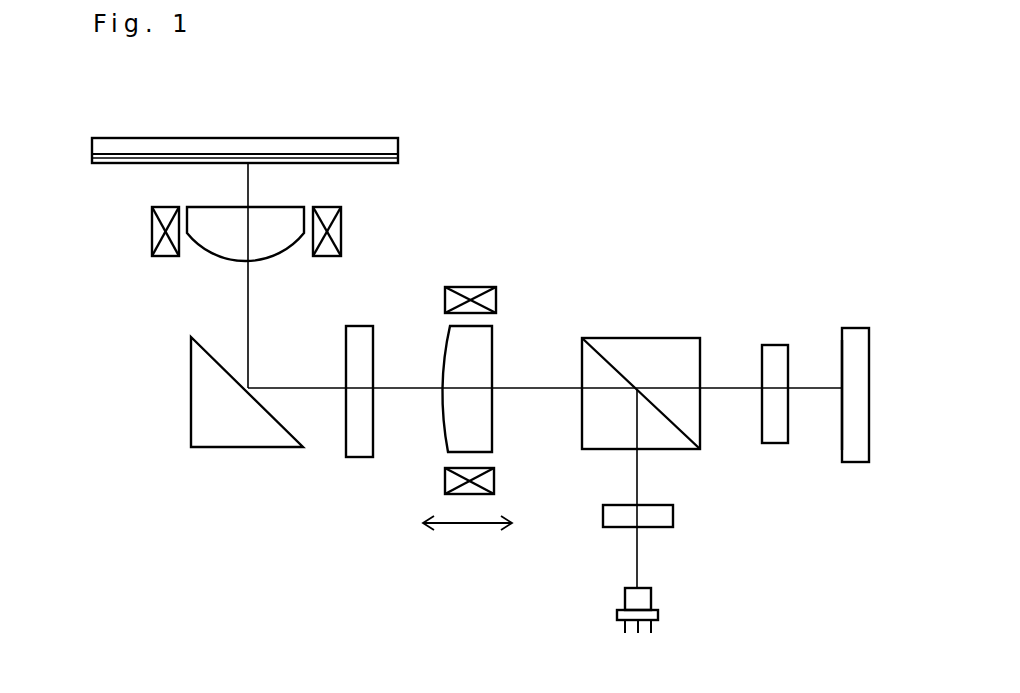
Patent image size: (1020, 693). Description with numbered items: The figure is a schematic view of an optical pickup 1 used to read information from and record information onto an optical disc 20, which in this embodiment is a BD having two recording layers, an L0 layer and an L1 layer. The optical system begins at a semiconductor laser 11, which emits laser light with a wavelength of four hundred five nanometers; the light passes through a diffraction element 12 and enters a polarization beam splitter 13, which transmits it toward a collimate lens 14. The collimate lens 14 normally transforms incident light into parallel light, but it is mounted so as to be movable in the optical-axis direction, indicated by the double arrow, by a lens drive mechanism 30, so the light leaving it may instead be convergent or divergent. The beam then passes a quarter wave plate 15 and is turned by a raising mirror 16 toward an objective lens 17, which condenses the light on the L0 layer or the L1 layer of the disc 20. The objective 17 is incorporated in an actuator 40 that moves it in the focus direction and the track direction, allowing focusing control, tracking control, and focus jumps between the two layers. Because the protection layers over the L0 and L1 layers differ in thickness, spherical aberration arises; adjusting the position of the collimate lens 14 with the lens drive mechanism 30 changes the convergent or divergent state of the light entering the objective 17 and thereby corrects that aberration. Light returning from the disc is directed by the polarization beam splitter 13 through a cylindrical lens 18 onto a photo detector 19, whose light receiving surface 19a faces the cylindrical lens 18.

The optical pickup 1 is at (572, 190).
The optical disc 20 is at (206, 138).
The L0 layer L0 is at (355, 153).
The L1 layer L1 is at (381, 163).
The actuator 40 is at (151, 228).
The objective lens 17 is at (218, 258).
The raising mirror 16 is at (192, 417).
The quarter wave plate 15 is at (360, 325).
The collimate lens 14 is at (446, 432).
The lens drive mechanism 30 is at (470, 286).
The polarization beam splitter 13 is at (584, 340).
The diffraction element 12 is at (603, 520).
The semiconductor laser 11 is at (617, 614).
The cylindrical lens 18 is at (778, 344).
The photo detector 19 is at (855, 328).
The light receiving surface 19a is at (842, 452).